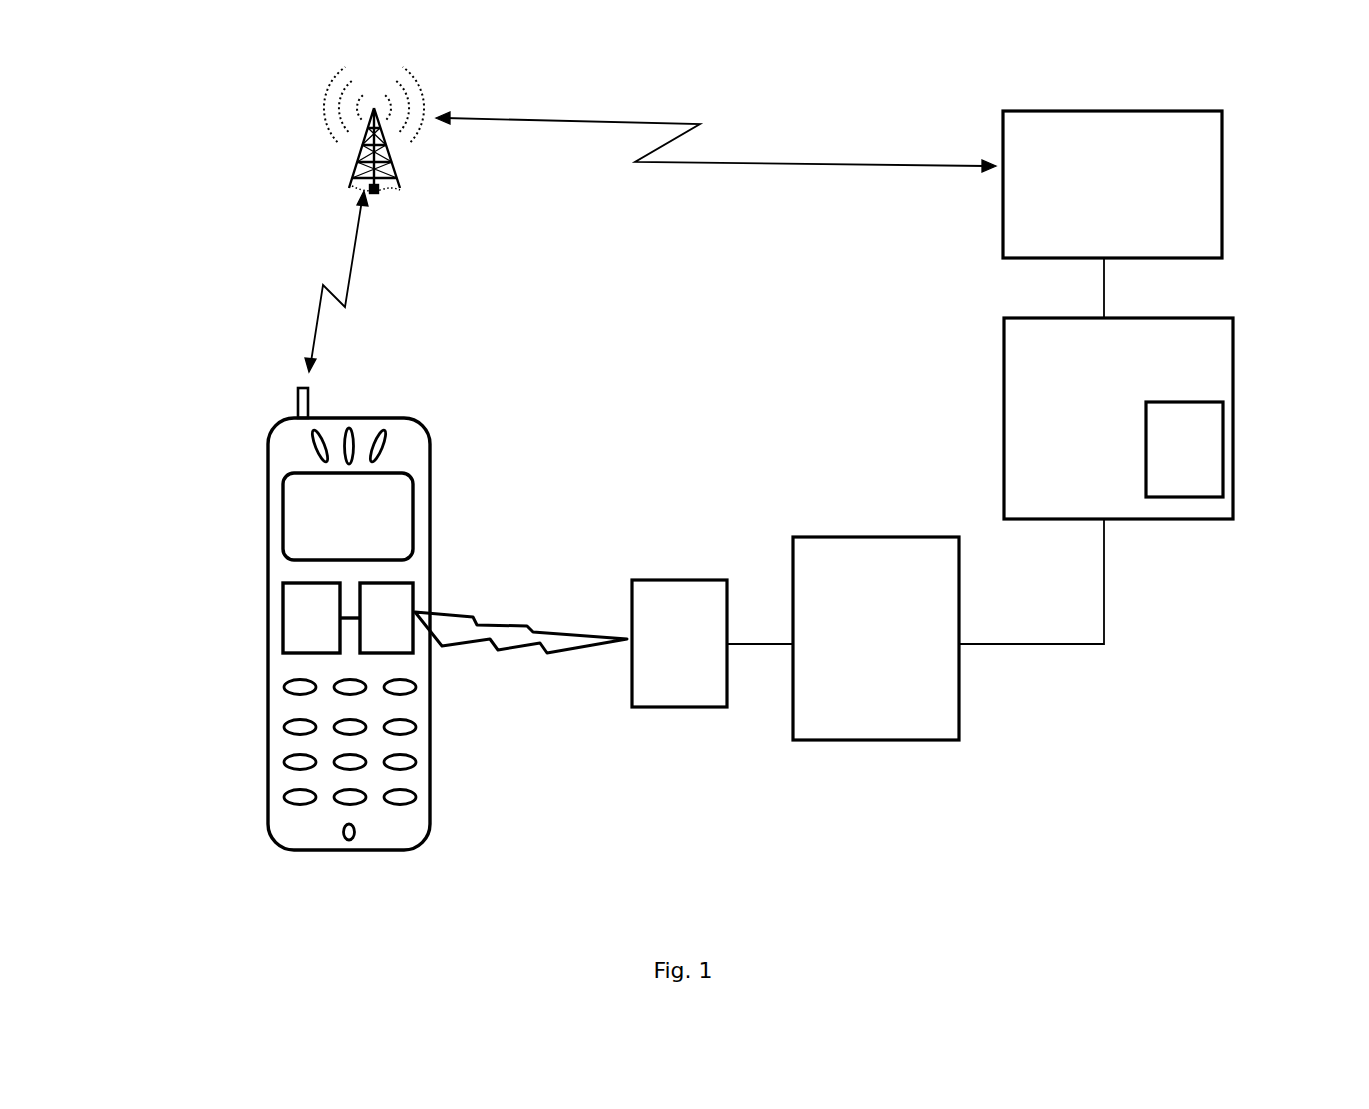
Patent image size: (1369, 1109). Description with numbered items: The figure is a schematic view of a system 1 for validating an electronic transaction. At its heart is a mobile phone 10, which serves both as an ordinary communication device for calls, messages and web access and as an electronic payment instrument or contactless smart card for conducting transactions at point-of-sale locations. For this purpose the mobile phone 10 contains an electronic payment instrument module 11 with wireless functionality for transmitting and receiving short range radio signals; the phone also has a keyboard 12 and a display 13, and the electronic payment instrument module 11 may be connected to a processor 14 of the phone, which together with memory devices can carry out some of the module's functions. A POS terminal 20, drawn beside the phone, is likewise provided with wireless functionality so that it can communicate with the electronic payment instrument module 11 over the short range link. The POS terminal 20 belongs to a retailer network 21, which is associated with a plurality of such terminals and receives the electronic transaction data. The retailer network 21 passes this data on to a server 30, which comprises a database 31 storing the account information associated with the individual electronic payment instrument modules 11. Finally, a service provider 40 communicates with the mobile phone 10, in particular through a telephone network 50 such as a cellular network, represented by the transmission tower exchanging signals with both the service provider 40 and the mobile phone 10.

The system 1 is at (142, 148).
The mobile phone 10 is at (342, 665).
The electronic payment instrument module 11 is at (413, 590).
The keyboard 12 is at (282, 670).
The display 13 is at (310, 517).
The processor 14 is at (303, 616).
The POS terminal 20 is at (679, 657).
The retailer network 21 is at (867, 693).
The server 30 is at (1159, 493).
The database 31 is at (1199, 447).
The service provider 40 is at (1196, 172).
The telephone network 50 is at (365, 148).